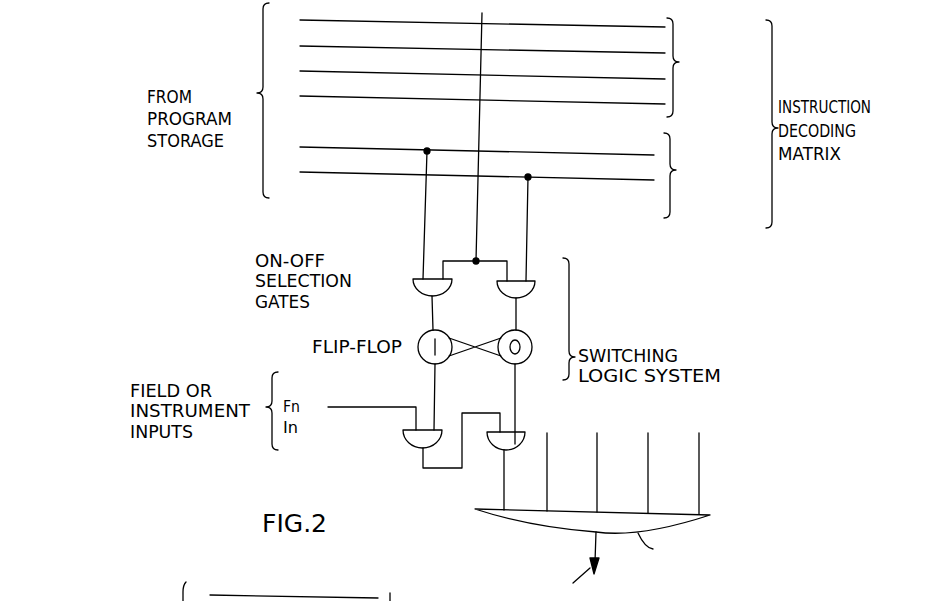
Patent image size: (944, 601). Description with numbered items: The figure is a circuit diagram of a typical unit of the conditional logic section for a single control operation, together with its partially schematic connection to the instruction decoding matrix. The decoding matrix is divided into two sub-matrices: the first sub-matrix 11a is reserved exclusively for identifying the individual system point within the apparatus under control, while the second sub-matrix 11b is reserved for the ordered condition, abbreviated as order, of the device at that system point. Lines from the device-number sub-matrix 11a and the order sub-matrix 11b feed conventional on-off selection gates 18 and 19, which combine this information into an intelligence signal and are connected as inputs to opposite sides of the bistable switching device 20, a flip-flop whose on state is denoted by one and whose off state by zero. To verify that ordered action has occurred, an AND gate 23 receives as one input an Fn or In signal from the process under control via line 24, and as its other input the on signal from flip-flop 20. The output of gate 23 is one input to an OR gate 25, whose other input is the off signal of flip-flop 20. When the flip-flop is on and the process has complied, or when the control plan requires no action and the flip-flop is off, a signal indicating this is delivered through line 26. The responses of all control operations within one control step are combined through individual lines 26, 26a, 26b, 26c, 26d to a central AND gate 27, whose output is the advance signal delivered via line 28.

The first sub-matrix 11a is at (676, 82).
The second sub-matrix 11b is at (673, 185).
The on-off selection gate 18 is at (445, 291).
The on-off selection gate 19 is at (500, 295).
The bistable switching device 20 is at (475, 355).
The AND gate 23 is at (417, 440).
The line 24 is at (383, 403).
The OR gate 25 is at (500, 446).
The line 26 is at (503, 491).
The line 26a is at (547, 491).
The line 26b is at (597, 491).
The line 26c is at (648, 491).
The line 26d is at (699, 491).
The central AND gate 27 is at (512, 517).
The line 28 is at (590, 556).